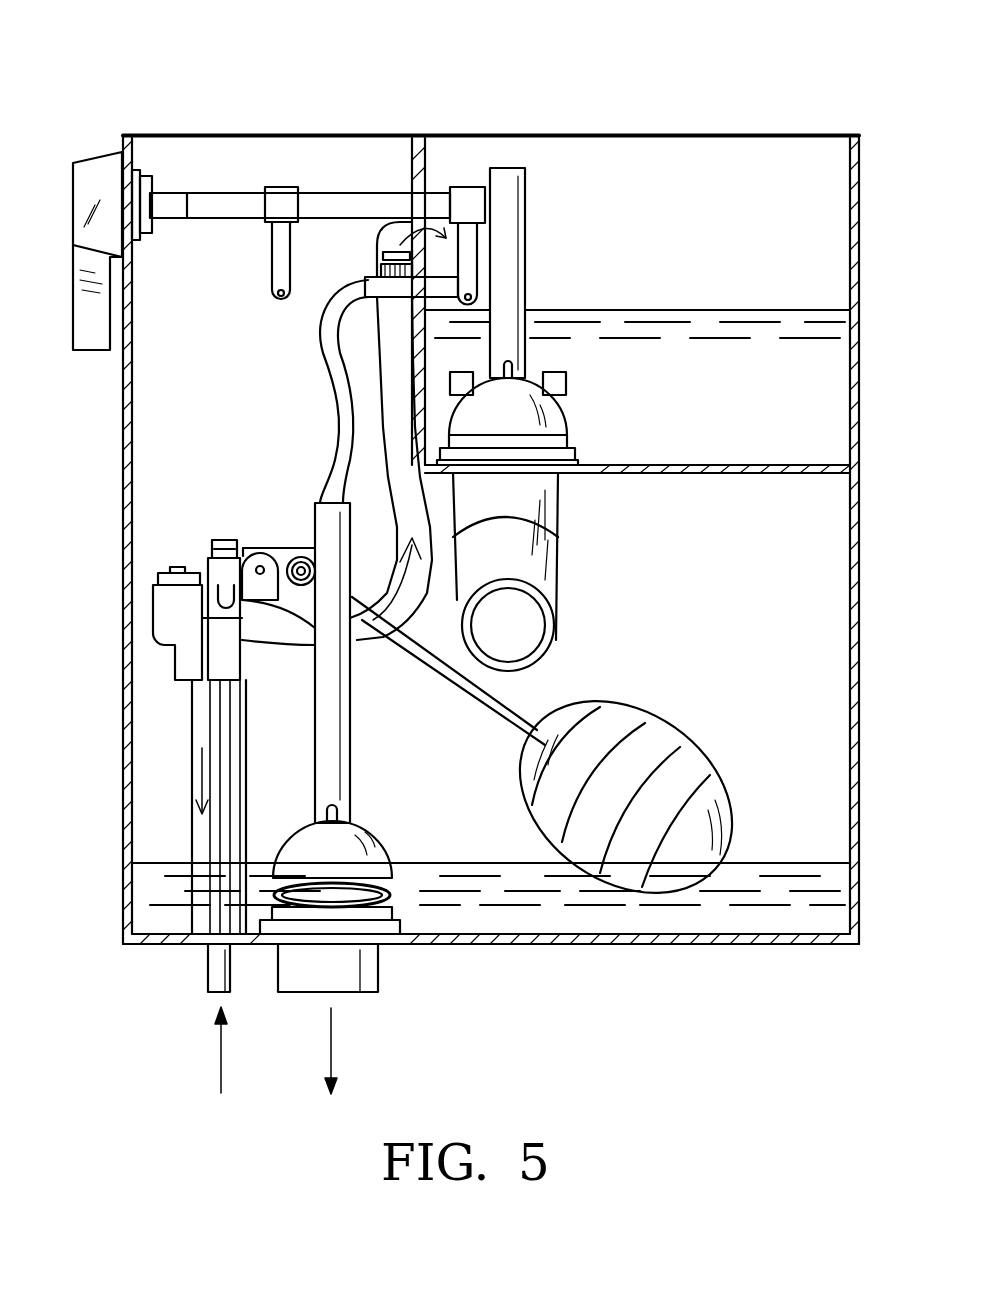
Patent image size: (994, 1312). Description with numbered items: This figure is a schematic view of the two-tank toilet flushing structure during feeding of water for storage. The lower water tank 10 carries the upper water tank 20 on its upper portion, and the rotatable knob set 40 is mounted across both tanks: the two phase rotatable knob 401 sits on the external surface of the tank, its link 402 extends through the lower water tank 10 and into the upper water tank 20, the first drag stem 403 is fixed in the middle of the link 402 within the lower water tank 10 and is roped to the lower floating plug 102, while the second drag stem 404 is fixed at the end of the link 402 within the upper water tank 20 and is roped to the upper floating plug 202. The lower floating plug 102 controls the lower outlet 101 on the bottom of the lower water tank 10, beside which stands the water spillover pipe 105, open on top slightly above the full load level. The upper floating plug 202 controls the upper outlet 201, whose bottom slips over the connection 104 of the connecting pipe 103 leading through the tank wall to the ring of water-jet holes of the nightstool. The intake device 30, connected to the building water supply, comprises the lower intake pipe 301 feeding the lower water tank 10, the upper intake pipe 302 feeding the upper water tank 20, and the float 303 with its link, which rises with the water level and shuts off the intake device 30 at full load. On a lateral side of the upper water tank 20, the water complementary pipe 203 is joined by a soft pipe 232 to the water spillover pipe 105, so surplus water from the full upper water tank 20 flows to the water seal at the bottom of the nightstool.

The lower water tank 10 is at (858, 908).
The upper water tank 20 is at (862, 187).
The intake device 30 is at (220, 967).
The rotatable knob set 40 is at (90, 183).
The lower outlet 101 is at (358, 973).
The lower floating plug 102 is at (390, 843).
The connecting pipe 103 is at (513, 628).
The connection 104 is at (563, 508).
The water spillover pipe 105 is at (330, 742).
The upper outlet 201 is at (580, 458).
The upper floating plug 202 is at (538, 420).
The water complementary pipe 203 is at (400, 250).
The soft pipe 232 is at (340, 443).
The lower intake pipe 301 is at (195, 798).
The upper intake pipe 302 is at (245, 618).
The float 303 is at (693, 778).
The rotatable knob 401 is at (92, 312).
The link 402 is at (222, 193).
The first drag stem 403 is at (286, 190).
The second drag stem 404 is at (462, 192).